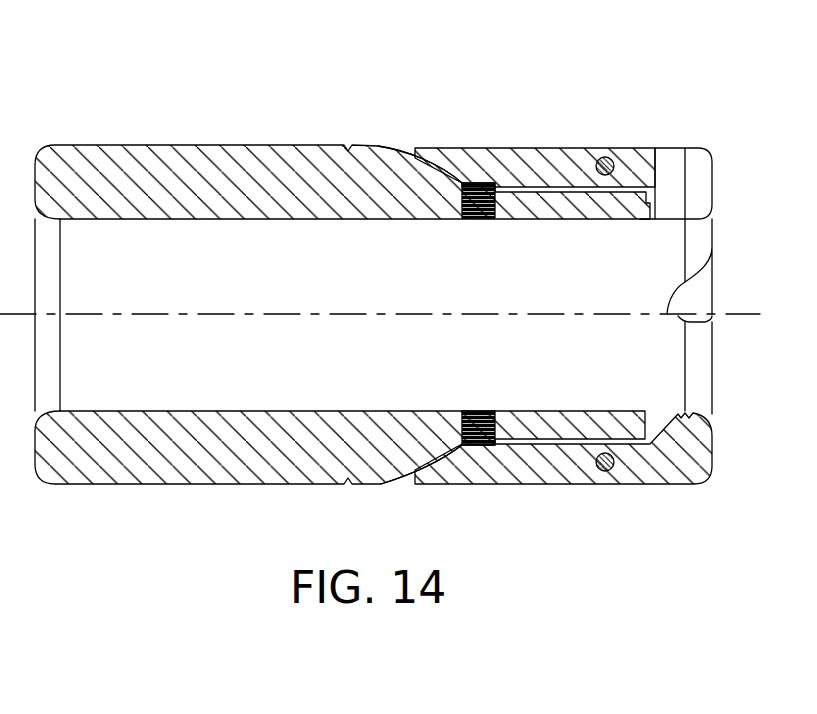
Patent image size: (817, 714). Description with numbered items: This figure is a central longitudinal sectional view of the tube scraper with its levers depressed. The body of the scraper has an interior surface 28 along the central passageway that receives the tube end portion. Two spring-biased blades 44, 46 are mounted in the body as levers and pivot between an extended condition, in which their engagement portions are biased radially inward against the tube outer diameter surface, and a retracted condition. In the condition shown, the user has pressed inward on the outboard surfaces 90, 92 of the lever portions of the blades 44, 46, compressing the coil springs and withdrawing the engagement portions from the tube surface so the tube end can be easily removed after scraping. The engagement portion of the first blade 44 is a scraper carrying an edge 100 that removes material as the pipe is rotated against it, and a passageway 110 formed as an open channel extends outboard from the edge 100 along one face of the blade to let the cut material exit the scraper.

The interior surface 28 is at (556, 221).
The blade 44 is at (580, 128).
The blade 46 is at (580, 500).
The outboard surface 90 is at (445, 147).
The outboard surface 92 is at (455, 487).
The edge 100 is at (667, 221).
The passageway 110 is at (673, 162).